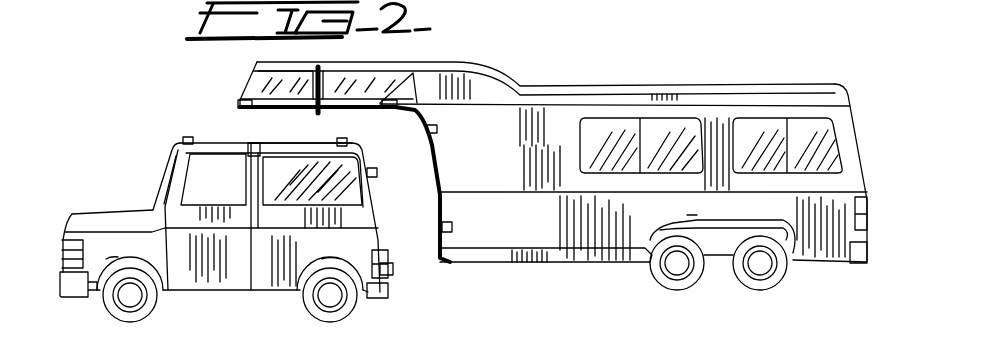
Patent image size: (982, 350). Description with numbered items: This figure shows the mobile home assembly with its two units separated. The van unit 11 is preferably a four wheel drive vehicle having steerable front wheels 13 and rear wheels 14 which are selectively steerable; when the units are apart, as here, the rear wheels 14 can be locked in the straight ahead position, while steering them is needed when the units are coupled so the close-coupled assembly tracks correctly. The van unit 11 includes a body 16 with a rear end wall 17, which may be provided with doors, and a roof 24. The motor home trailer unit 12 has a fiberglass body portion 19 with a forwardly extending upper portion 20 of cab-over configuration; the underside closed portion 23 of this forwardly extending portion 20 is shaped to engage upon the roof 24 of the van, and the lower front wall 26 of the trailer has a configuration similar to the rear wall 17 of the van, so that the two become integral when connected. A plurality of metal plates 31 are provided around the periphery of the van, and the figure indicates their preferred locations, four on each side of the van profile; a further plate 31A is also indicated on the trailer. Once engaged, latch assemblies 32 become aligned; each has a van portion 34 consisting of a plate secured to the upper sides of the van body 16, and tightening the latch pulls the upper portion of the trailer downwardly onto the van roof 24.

The van unit 11 is at (237, 219).
The motor home trailer unit 12 is at (509, 164).
The steerable front wheels 13 is at (118, 326).
The rear wheels 14 is at (316, 318).
The body 16 is at (163, 178).
The rear end wall 17 is at (378, 192).
The body portion 19 is at (727, 123).
The forwardly extending upper portion 20 is at (222, 88).
The underside closed portion 23 is at (413, 73).
The roof 24 is at (308, 142).
The lower front wall 26 is at (438, 188).
The metal plates 31 is at (187, 137).
The trailer sensor 31A is at (437, 129).
The latch assemblies 32 is at (328, 96).
The van portion 34 is at (250, 167).